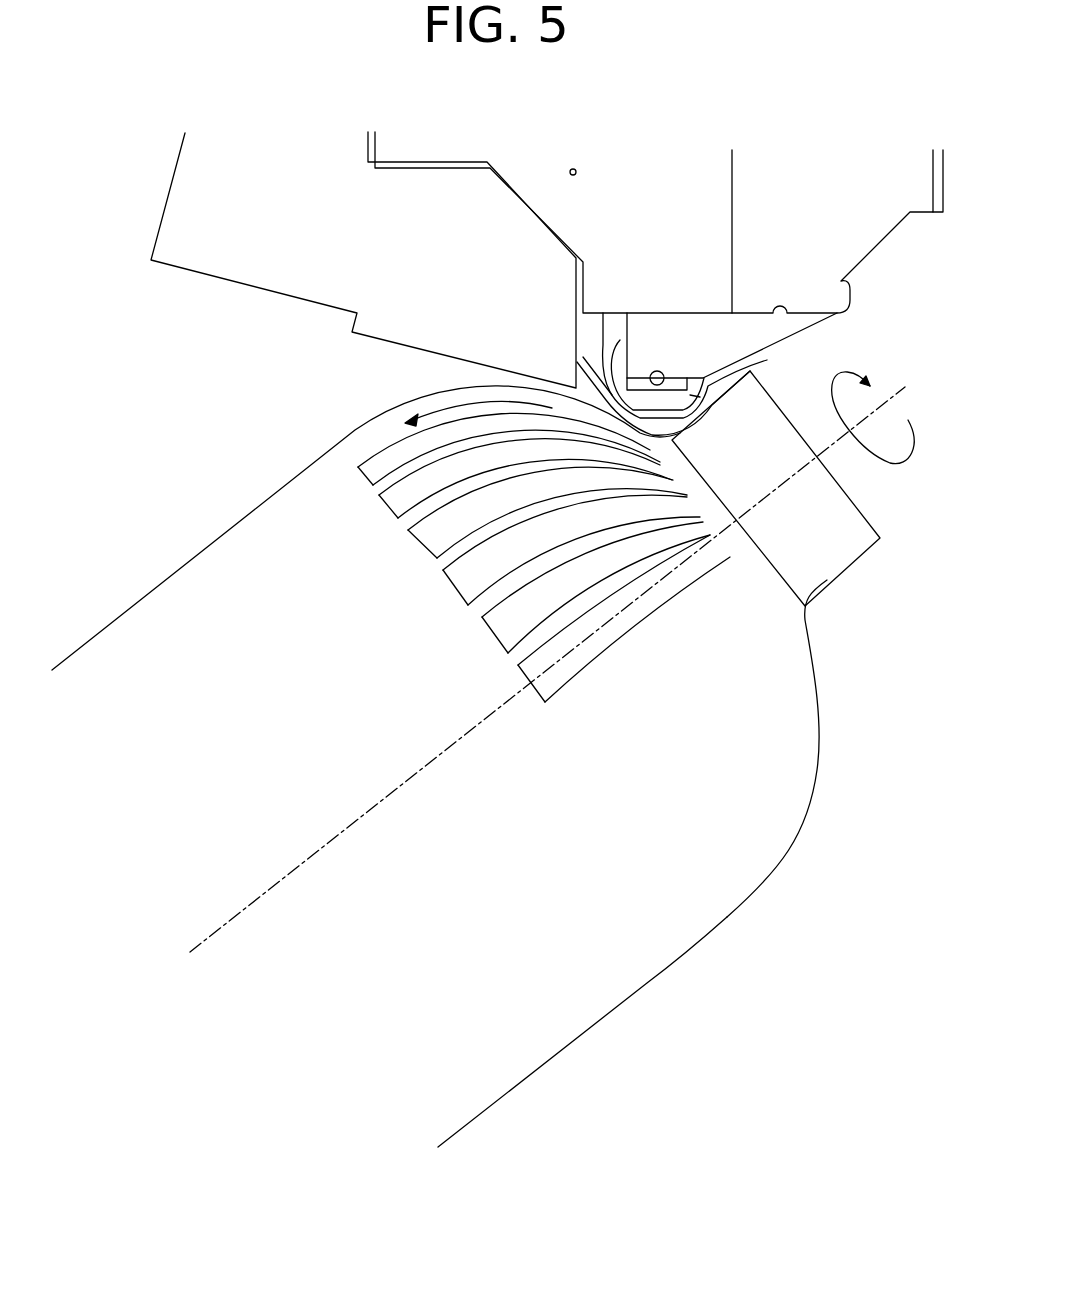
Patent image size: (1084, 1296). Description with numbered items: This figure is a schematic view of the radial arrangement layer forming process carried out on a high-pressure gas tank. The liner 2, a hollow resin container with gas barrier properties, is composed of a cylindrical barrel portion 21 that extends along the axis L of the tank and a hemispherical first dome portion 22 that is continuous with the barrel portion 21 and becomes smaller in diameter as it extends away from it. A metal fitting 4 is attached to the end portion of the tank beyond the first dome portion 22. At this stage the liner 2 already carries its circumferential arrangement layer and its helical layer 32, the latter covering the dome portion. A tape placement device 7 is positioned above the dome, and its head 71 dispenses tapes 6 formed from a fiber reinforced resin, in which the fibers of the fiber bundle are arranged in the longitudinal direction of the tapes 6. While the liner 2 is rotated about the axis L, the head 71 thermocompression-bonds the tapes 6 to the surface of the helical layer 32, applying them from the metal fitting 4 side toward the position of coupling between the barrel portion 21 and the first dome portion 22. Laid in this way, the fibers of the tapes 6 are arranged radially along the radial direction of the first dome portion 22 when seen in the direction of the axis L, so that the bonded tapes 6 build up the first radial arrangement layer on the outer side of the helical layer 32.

The liner 2 is at (681, 869).
The barrel portion 21 is at (474, 996).
The first dome portion 22 is at (709, 712).
The metal fitting 4 is at (852, 530).
The tapes 6 is at (467, 578).
The tape placement device 7 is at (178, 200).
The head 71 is at (753, 363).
The helical layer 32 is at (247, 552).
The axis L is at (247, 907).